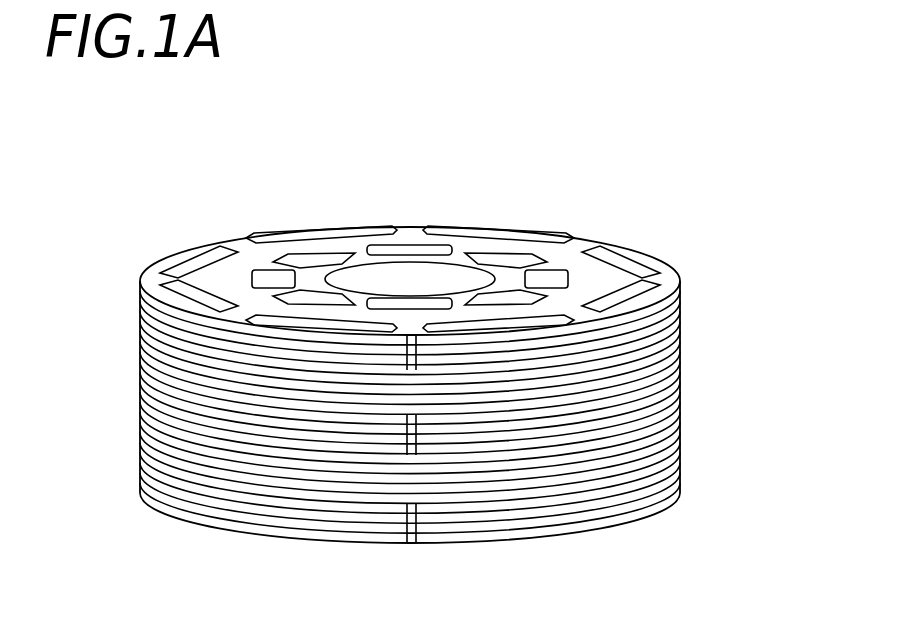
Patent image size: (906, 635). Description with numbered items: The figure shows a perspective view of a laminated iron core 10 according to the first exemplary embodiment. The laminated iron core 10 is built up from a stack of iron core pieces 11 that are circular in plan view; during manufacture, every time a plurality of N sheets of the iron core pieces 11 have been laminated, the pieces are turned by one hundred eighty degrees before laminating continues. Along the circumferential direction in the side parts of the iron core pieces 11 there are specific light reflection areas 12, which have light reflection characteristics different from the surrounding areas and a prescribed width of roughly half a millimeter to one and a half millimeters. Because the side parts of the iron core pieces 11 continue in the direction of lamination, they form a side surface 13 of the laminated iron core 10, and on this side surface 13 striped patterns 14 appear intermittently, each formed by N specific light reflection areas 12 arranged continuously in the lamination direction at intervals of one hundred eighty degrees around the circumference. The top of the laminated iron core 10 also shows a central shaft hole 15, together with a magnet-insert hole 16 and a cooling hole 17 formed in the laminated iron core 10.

The laminated iron core 10 is at (448, 150).
The iron core piece 11 is at (744, 486).
The specific light reflection area 12 is at (410, 369).
The side surface 13 is at (135, 374).
The striped pattern 14 is at (419, 355).
The shaft hole 15 is at (380, 274).
The magnet-insert hole 16 is at (192, 263).
The cooling hole 17 is at (268, 280).